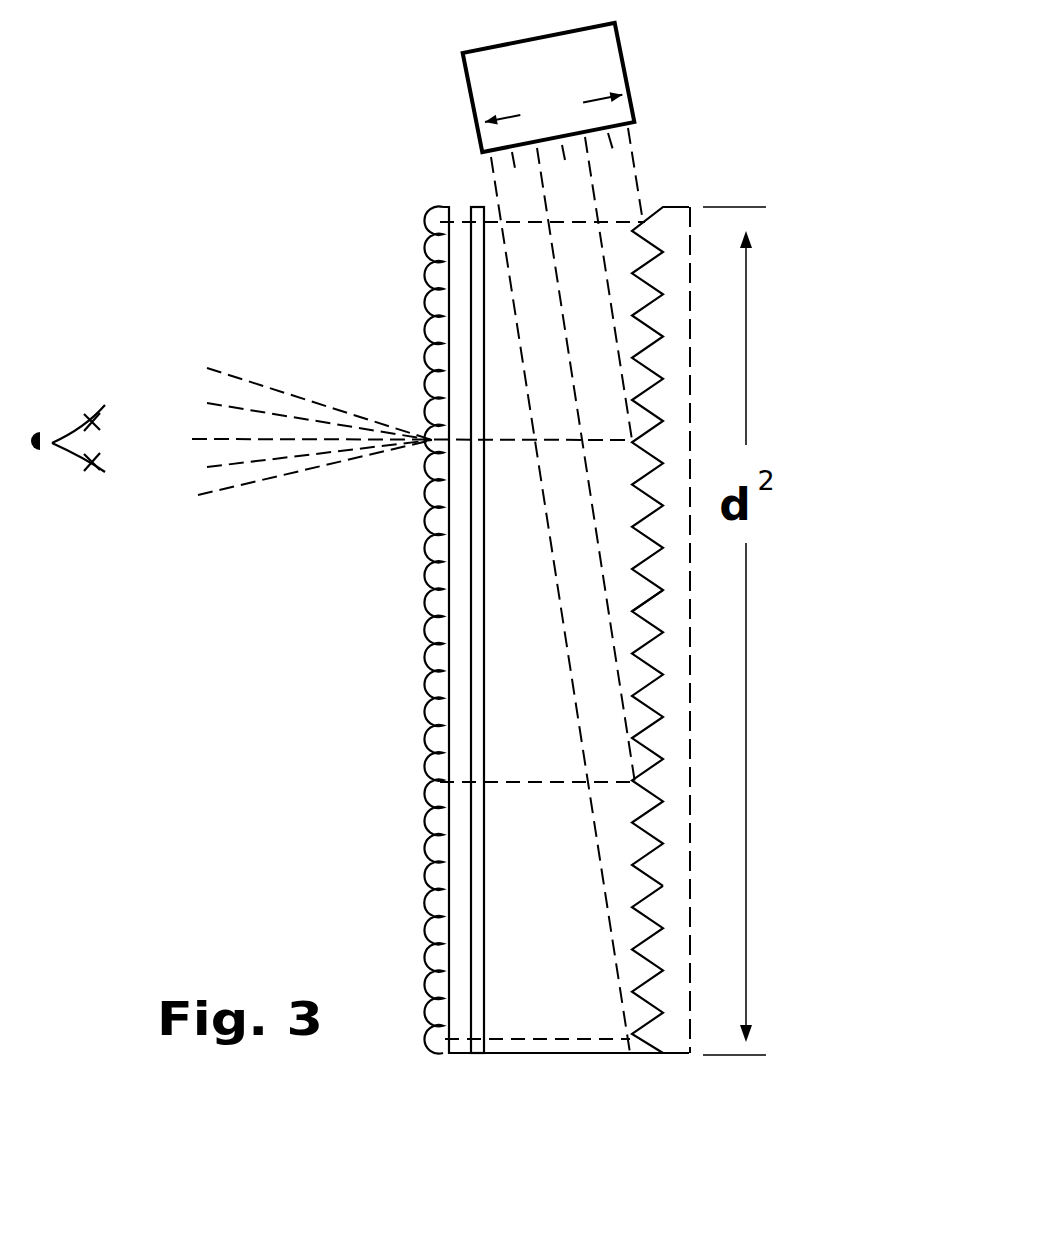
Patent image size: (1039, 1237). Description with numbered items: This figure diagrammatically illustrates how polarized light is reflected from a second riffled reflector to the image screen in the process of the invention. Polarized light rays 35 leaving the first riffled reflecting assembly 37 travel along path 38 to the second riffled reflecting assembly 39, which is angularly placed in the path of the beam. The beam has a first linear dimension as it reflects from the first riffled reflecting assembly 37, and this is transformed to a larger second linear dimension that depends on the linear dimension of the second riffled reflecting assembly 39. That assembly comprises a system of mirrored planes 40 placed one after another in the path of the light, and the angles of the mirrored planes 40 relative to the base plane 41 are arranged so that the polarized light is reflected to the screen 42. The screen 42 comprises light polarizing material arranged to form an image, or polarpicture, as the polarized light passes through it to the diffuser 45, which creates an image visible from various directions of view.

The polarized light rays 35 is at (622, 152).
The first riffled reflecting assembly 37 is at (643, 60).
The path 38 is at (580, 407).
The second riffled reflecting assembly 39 is at (721, 630).
The mirrored planes 40 is at (638, 644).
The base plane 41 is at (692, 795).
The screen 42 is at (468, 207).
The diffuser 45 is at (420, 393).